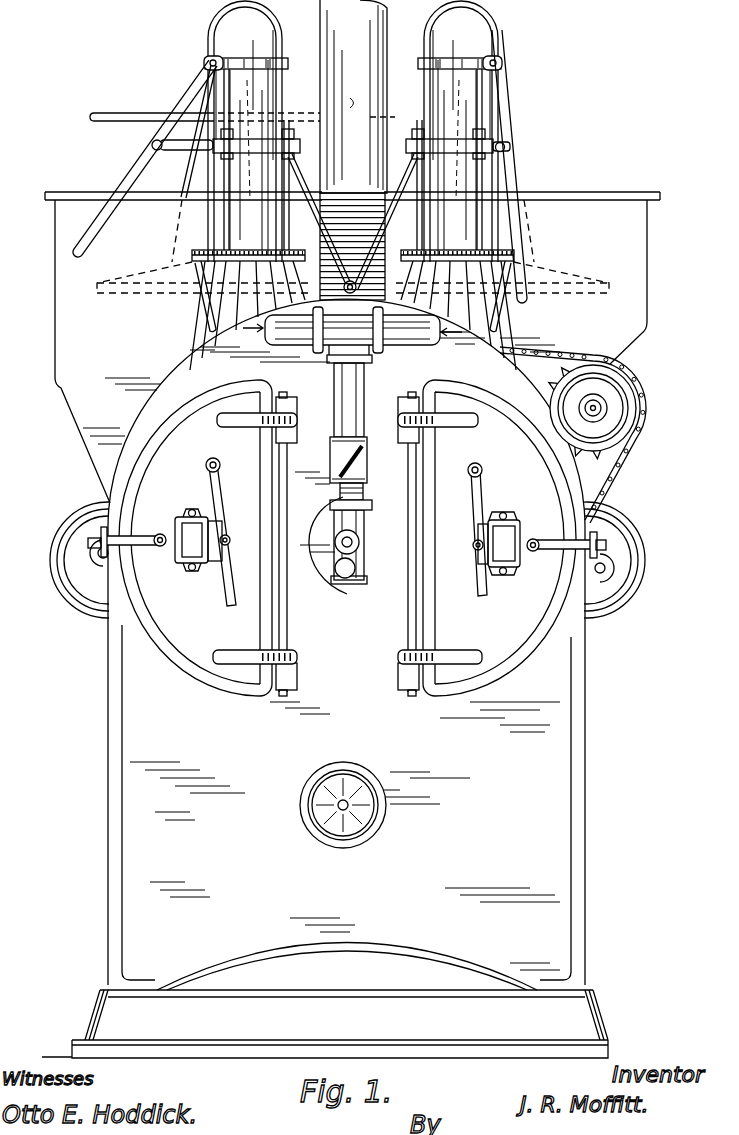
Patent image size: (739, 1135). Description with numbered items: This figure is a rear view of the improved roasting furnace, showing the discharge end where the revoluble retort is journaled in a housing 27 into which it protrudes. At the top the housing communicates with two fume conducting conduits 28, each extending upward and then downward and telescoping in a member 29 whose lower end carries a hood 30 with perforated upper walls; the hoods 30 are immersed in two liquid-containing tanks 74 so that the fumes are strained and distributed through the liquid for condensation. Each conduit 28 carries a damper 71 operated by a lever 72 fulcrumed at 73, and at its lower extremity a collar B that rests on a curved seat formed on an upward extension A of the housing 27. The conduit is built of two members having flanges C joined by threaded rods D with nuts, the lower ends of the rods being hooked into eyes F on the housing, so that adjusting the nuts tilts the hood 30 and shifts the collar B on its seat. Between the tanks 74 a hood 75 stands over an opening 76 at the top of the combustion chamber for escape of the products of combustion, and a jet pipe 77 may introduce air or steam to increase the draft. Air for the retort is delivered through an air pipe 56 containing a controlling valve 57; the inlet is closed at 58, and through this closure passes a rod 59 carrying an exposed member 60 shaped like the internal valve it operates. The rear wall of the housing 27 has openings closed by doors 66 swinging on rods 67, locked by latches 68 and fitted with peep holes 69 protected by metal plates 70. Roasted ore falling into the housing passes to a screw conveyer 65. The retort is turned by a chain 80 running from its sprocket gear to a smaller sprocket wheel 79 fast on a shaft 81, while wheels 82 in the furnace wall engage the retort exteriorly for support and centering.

The housing 27 is at (325, 678).
The fume conducting conduit 28 is at (353, 131).
The telescoping member 29 is at (190, 181).
The hood 30 is at (133, 268).
The air pipe 56 is at (364, 380).
The controlling valve 57 is at (352, 462).
The closure 58 is at (370, 508).
The rod 59 is at (350, 546).
The exposed member 60 is at (322, 565).
The screw conveyer 65 is at (318, 828).
The door 66 is at (347, 538).
The rod 67 is at (408, 470).
The latch 68 is at (150, 533).
The peep hole 69 is at (182, 563).
The metal plate 70 is at (220, 522).
The damper 71 is at (155, 142).
The lever 72 is at (130, 170).
The fulcrum 73 is at (206, 61).
The liquid-containing tank 74 is at (352, 347).
The hood 75 is at (322, 262).
The opening 76 is at (386, 40).
The jet pipe 77 is at (125, 112).
The sprocket wheel 79 is at (598, 368).
The chain 80 is at (620, 480).
The shaft 81 is at (596, 409).
The wheel 82 is at (55, 582).
The upward extension A is at (353, 315).
The collar B is at (195, 264).
The flange C is at (300, 138).
The rod D is at (297, 186).
The eye F is at (195, 336).
The pipe end a is at (433, 7).